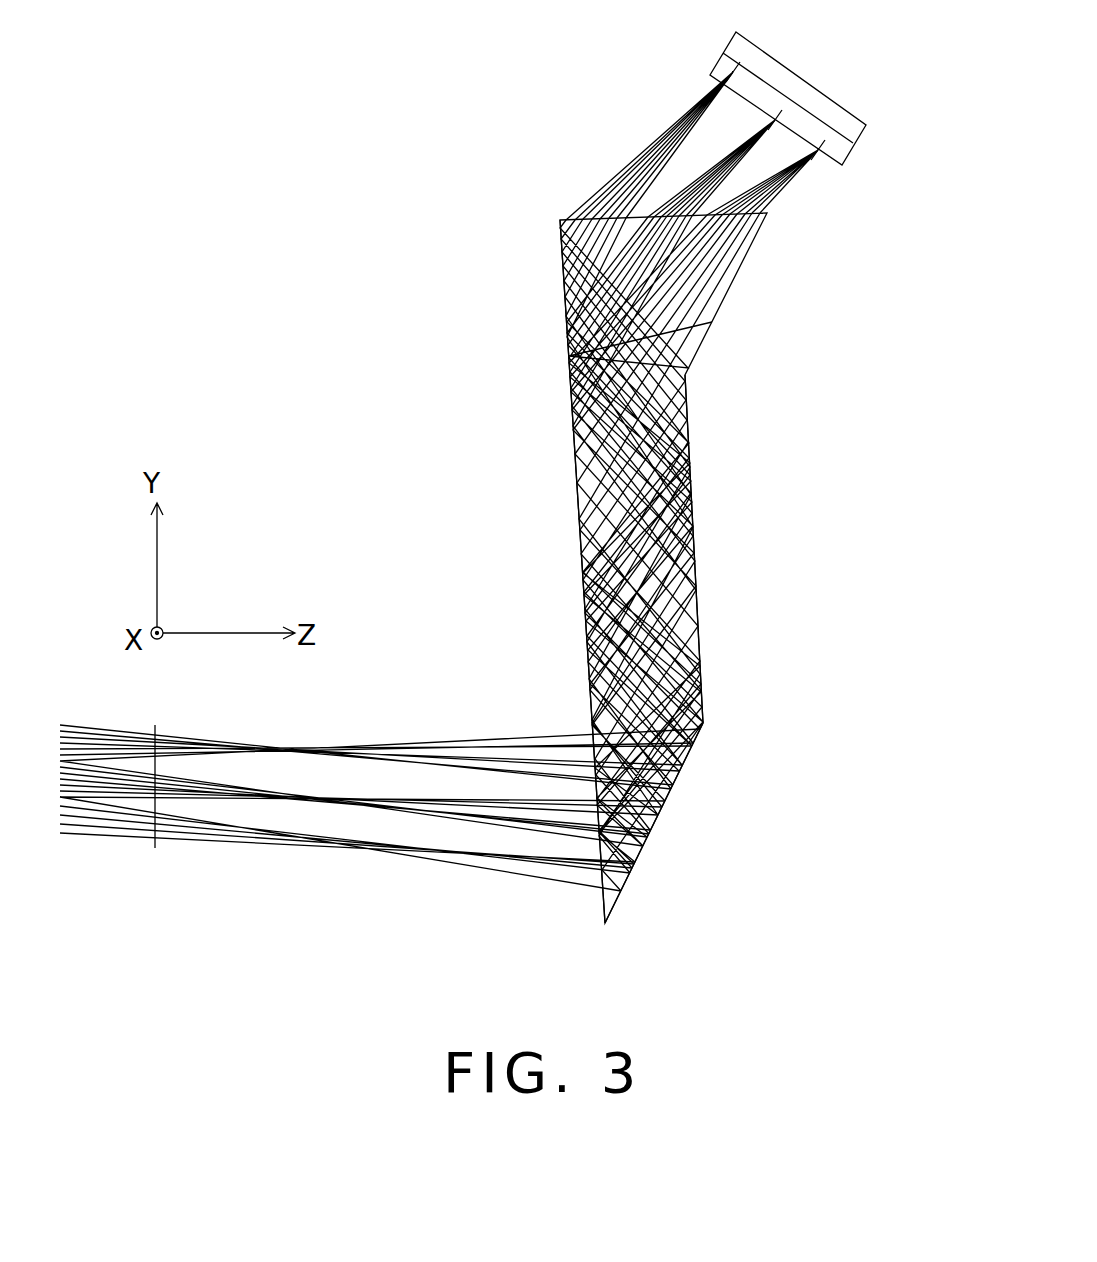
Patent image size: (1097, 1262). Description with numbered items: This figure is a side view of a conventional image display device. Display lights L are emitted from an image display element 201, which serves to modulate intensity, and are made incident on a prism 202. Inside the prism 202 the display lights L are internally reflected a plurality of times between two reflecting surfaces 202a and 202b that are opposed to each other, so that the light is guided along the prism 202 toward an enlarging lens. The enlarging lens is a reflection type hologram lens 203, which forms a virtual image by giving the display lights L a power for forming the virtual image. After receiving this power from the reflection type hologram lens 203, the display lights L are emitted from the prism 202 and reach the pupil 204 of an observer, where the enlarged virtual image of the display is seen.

The image display element 201 is at (853, 137).
The display lights L is at (621, 155).
The prism 202 is at (720, 315).
The reflecting surface 202a is at (577, 510).
The reflecting surface 202b is at (692, 498).
The reflection type hologram lens 203 is at (662, 820).
The pupil 204 is at (157, 848).